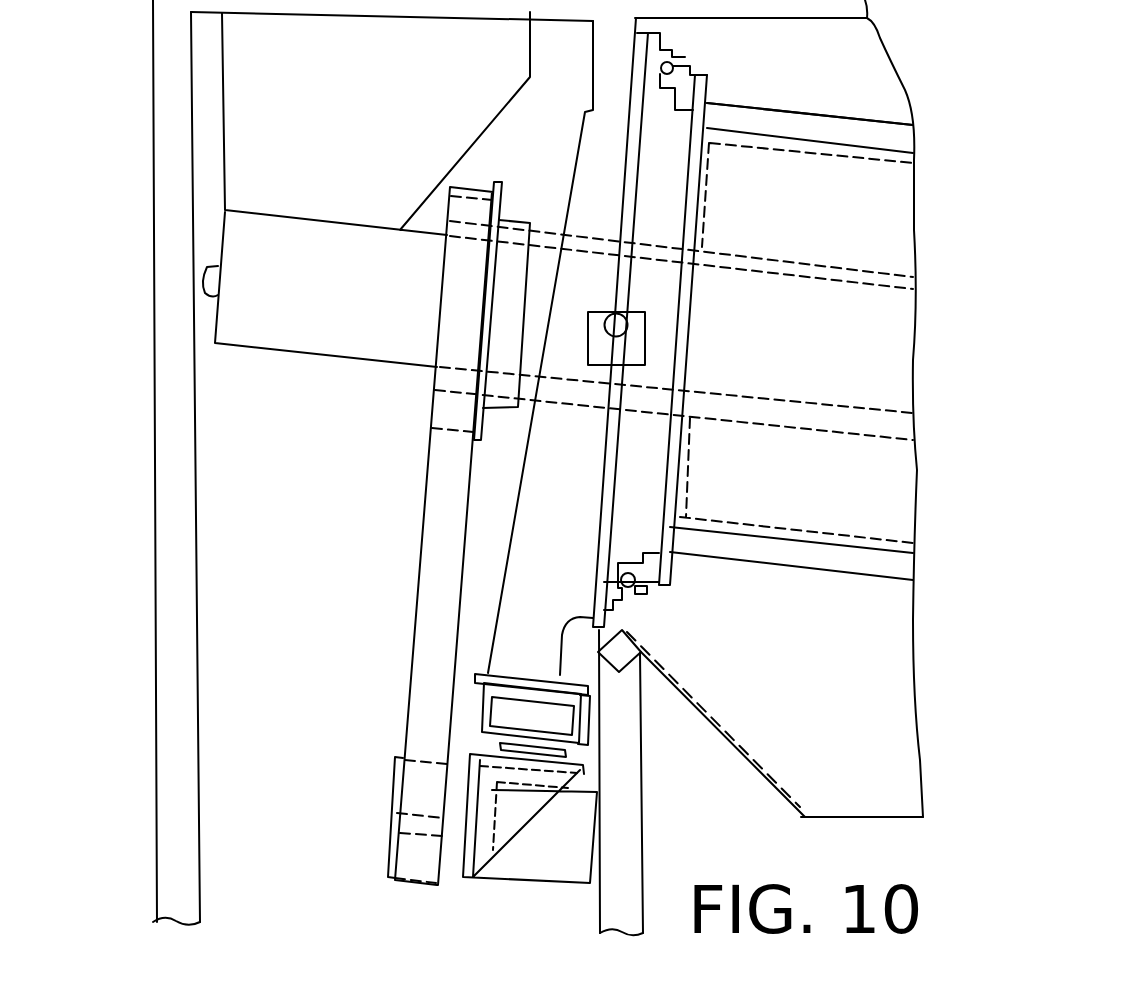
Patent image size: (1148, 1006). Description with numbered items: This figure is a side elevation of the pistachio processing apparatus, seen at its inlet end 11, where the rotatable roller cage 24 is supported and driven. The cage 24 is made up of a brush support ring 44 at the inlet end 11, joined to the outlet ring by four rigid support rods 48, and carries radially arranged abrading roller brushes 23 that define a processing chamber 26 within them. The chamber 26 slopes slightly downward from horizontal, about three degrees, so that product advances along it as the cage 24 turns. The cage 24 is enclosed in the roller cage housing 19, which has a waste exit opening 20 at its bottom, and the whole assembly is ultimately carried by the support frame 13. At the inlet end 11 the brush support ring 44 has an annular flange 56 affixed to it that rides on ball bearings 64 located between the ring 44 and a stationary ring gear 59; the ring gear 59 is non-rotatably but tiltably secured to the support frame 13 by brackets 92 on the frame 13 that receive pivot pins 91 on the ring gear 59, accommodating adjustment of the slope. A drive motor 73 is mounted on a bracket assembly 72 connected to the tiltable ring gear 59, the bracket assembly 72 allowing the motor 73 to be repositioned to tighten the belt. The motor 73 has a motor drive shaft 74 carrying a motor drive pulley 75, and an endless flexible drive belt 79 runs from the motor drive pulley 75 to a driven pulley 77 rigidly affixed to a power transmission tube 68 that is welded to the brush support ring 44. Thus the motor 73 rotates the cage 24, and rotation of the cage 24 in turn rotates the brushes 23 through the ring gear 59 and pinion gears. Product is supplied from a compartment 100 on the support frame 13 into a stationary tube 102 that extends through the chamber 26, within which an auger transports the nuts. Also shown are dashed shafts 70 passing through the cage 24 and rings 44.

The inlet end 11 is at (150, 413).
The support frame 13 is at (642, 845).
The roller cage housing 19 is at (743, 760).
The waste exit opening 20 is at (858, 810).
The roller brushes 23 is at (828, 142).
The roller cage 24 is at (796, 113).
The chamber 26 is at (816, 358).
The brush support ring 44 is at (708, 88).
The support rods 48 is at (867, 120).
The annular flange 56 is at (708, 83).
The ring gear 59 is at (638, 107).
The ball bearings 64 is at (678, 61).
The power transmission tube 68 is at (550, 237).
The shaft 70 is at (693, 262).
The bracket assembly 72 is at (527, 672).
The drive motor 73 is at (543, 860).
The motor drive shaft 74 is at (407, 832).
The motor drive pulley 75 is at (393, 790).
The driven pulley 77 is at (502, 188).
The drive belt 79 is at (407, 712).
The pivot pins 91 is at (604, 334).
The brackets 92 is at (605, 363).
The compartment 100 is at (396, 101).
The tube 102 is at (359, 308).